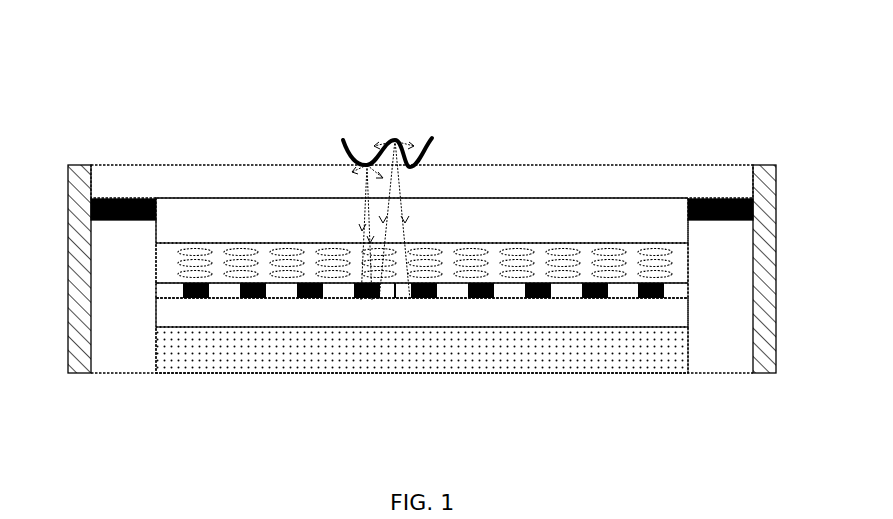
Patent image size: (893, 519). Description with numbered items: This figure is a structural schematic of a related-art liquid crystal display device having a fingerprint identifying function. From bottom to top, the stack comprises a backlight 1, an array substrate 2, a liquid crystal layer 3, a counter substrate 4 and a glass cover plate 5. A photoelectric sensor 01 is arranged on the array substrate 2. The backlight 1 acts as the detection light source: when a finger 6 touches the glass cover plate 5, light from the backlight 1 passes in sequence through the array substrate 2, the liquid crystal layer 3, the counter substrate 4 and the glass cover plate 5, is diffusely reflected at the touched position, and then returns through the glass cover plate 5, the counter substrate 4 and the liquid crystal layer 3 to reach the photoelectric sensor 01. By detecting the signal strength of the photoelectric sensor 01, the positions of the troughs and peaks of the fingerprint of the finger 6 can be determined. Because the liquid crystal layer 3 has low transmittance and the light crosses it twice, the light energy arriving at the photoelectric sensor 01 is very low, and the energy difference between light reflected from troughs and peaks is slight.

The backlight 1 is at (422, 386).
The array substrate 2 is at (422, 372).
The photoelectric sensor 01 is at (422, 367).
The liquid crystal layer 3 is at (430, 204).
The counter substrate 4 is at (422, 172).
The glass cover plate 5 is at (422, 144).
The finger 6 is at (344, 139).